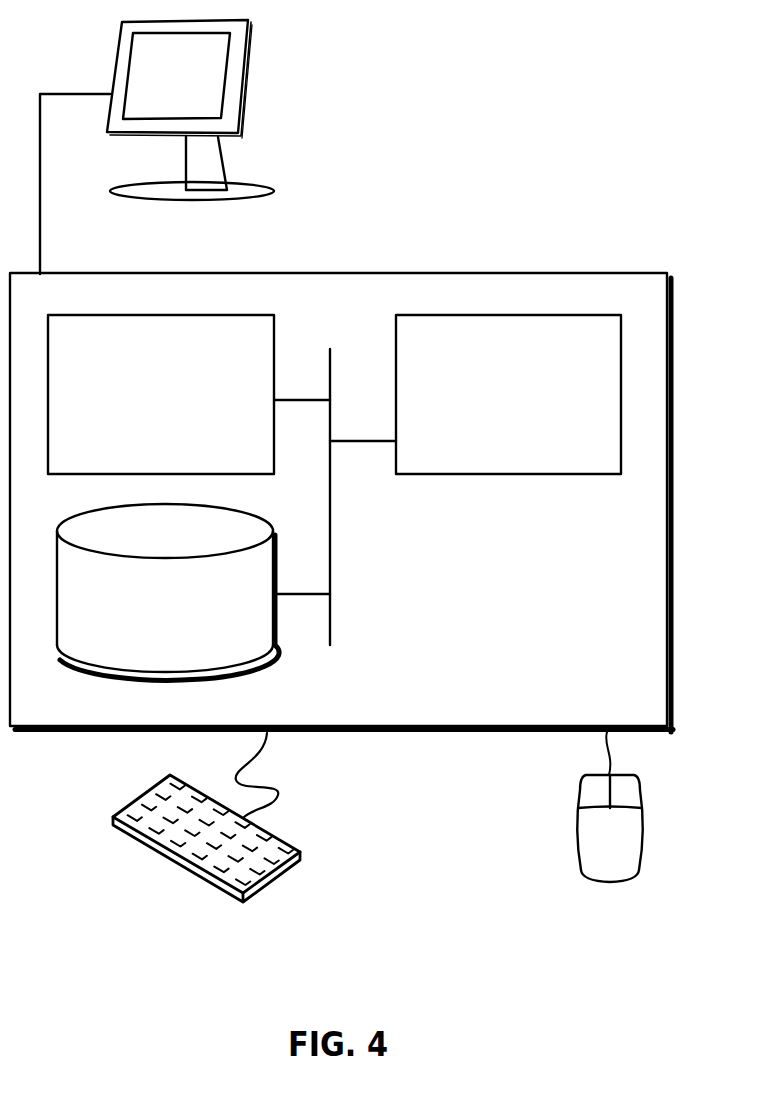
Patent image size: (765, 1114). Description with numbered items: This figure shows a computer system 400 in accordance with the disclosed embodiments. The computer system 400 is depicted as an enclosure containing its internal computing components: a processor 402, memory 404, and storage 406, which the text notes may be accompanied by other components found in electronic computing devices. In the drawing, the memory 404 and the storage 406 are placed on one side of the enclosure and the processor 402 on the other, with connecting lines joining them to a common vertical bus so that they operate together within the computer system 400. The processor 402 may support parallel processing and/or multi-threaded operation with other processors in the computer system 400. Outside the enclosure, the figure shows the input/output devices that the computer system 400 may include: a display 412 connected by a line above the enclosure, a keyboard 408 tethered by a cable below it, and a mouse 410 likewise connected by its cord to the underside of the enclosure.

The computer system 400 is at (385, 252).
The processor 402 is at (491, 409).
The memory 404 is at (142, 409).
The storage 406 is at (148, 619).
The keyboard 408 is at (132, 838).
The mouse 410 is at (590, 849).
The display 412 is at (157, 147).